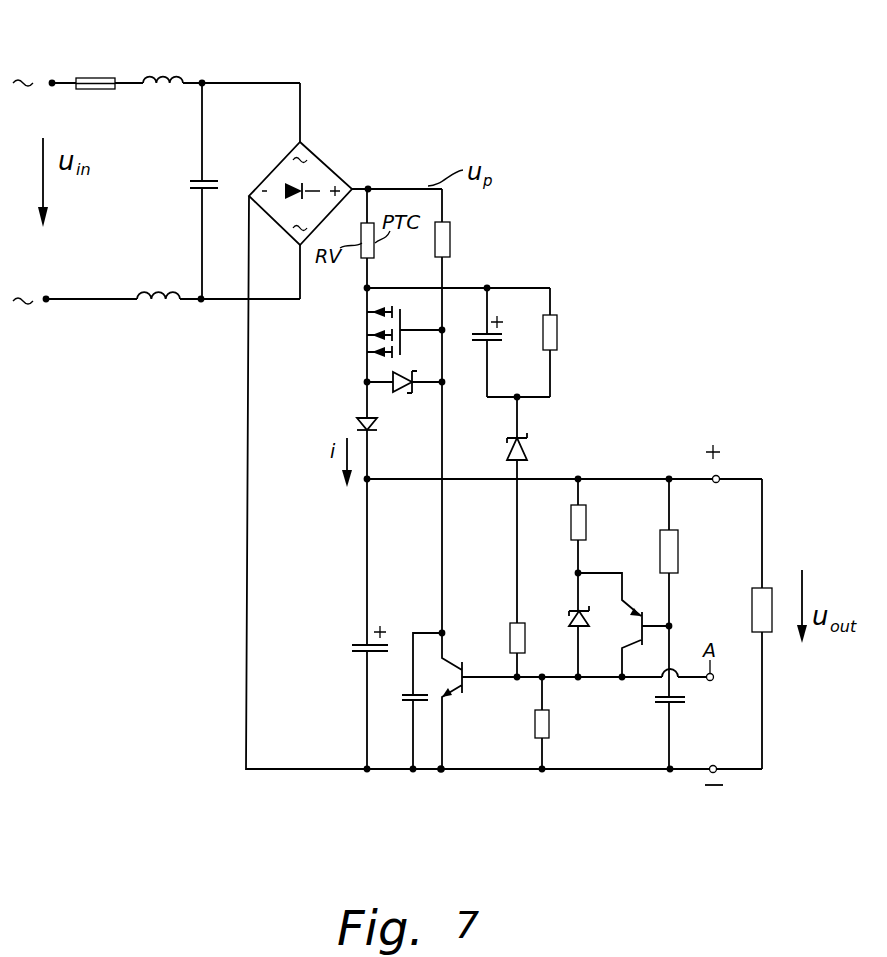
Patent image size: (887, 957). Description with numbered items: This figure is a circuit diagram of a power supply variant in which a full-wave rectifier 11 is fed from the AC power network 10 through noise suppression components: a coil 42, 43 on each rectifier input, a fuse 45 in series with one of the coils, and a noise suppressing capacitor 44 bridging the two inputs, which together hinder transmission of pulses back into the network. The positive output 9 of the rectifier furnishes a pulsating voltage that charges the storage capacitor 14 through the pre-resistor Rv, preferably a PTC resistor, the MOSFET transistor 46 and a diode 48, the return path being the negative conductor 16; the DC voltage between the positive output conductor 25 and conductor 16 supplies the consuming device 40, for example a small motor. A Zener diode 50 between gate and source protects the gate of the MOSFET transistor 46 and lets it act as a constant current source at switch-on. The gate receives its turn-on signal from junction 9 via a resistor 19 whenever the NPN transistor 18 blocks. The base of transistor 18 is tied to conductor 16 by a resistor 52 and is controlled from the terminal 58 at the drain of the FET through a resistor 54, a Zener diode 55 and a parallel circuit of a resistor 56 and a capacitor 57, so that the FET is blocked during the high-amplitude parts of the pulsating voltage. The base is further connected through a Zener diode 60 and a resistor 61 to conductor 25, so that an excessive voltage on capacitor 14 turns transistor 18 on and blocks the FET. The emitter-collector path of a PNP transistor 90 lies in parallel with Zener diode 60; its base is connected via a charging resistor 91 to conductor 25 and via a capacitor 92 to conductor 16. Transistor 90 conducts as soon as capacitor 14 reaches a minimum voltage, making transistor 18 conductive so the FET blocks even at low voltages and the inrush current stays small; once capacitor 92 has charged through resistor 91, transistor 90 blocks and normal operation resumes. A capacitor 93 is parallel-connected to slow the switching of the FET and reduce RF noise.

The AC power network 10 is at (50, 75).
The fuse 45 is at (97, 73).
The coil 42 is at (167, 75).
The coil 43 is at (157, 303).
The noise suppressing capacitor 44 is at (188, 184).
The full-wave rectifier 11 is at (330, 155).
The positive output 9 is at (373, 188).
The resistor 19 is at (452, 245).
The terminal 58 is at (364, 289).
The MOSFET transistor 46 is at (358, 343).
The Zener diode 50 is at (401, 396).
The diode 48 is at (357, 422).
The capacitor 57 is at (473, 338).
The resistor 56 is at (558, 334).
The Zener diode 55 is at (507, 448).
The positive output conductor 25 is at (557, 478).
The storage capacitor 14 is at (348, 648).
The negative conductor 16 is at (245, 582).
The NPN transistor 18 is at (452, 662).
The capacitor 93 is at (398, 700).
The resistor 54 is at (510, 628).
The resistor 52 is at (550, 723).
The resistor 61 is at (587, 517).
The Zener diode 60 is at (568, 615).
The PNP transistor 90 is at (645, 615).
The charging resistor 91 is at (678, 553).
The capacitor 92 is at (687, 700).
The consuming device 40 is at (750, 602).